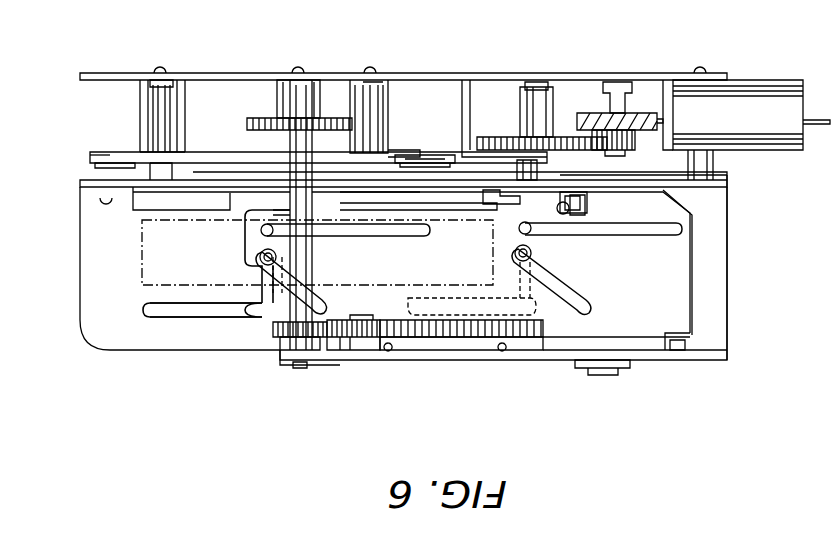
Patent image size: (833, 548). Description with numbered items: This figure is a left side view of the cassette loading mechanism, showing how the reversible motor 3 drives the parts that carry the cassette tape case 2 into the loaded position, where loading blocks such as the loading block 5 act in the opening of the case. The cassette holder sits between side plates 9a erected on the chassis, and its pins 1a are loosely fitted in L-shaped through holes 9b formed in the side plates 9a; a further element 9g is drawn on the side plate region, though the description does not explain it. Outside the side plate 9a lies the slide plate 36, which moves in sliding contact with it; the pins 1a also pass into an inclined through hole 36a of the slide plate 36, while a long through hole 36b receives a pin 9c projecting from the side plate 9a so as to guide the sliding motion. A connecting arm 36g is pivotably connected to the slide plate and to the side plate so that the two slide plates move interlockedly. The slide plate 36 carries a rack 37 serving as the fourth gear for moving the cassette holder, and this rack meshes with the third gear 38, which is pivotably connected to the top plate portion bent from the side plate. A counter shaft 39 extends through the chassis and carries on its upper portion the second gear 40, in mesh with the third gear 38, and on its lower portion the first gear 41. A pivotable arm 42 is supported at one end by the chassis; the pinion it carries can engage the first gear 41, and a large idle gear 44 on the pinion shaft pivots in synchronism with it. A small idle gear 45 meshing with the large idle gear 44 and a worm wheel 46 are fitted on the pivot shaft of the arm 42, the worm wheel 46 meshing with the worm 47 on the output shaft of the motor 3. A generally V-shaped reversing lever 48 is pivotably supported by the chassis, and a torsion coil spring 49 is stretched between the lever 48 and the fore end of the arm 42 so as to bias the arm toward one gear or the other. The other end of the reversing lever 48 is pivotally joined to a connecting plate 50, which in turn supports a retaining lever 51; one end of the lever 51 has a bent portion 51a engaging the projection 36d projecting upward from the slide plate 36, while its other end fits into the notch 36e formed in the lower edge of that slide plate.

The cassette tape case 2 is at (150, 248).
The reversible motor 3 is at (755, 87).
The loading block 5 is at (80, 182).
The side plate 9a is at (220, 342).
The L-shaped through hole 9b is at (175, 303).
The pin 9c is at (513, 360).
The pin 9g is at (261, 230).
The pin 1a is at (260, 259).
The slide plate 36 is at (692, 283).
The inclined through hole 36a is at (330, 292).
The long through hole 36b is at (365, 231).
The projection 36d is at (557, 208).
The notch 36e is at (345, 195).
The connecting arm 36g is at (620, 370).
The rack 37 is at (450, 337).
The third gear for moving the cassette holder 38 is at (365, 350).
The counter shaft 39 is at (290, 142).
The second gear for moving the cassette holder 40 is at (275, 335).
The first gear for moving the cassette holder 41 is at (246, 118).
The pivotable arm 42 is at (508, 82).
The large idle gear 44 is at (477, 137).
The small idle gear 45 is at (635, 145).
The worm wheel 46 is at (240, 73).
The worm 47 is at (590, 113).
The reversing lever 48 is at (115, 152).
The torsion coil spring 49 is at (425, 153).
The connecting plate 50 is at (93, 158).
The retaining lever 51 is at (483, 195).
The bent portion 51a is at (588, 206).